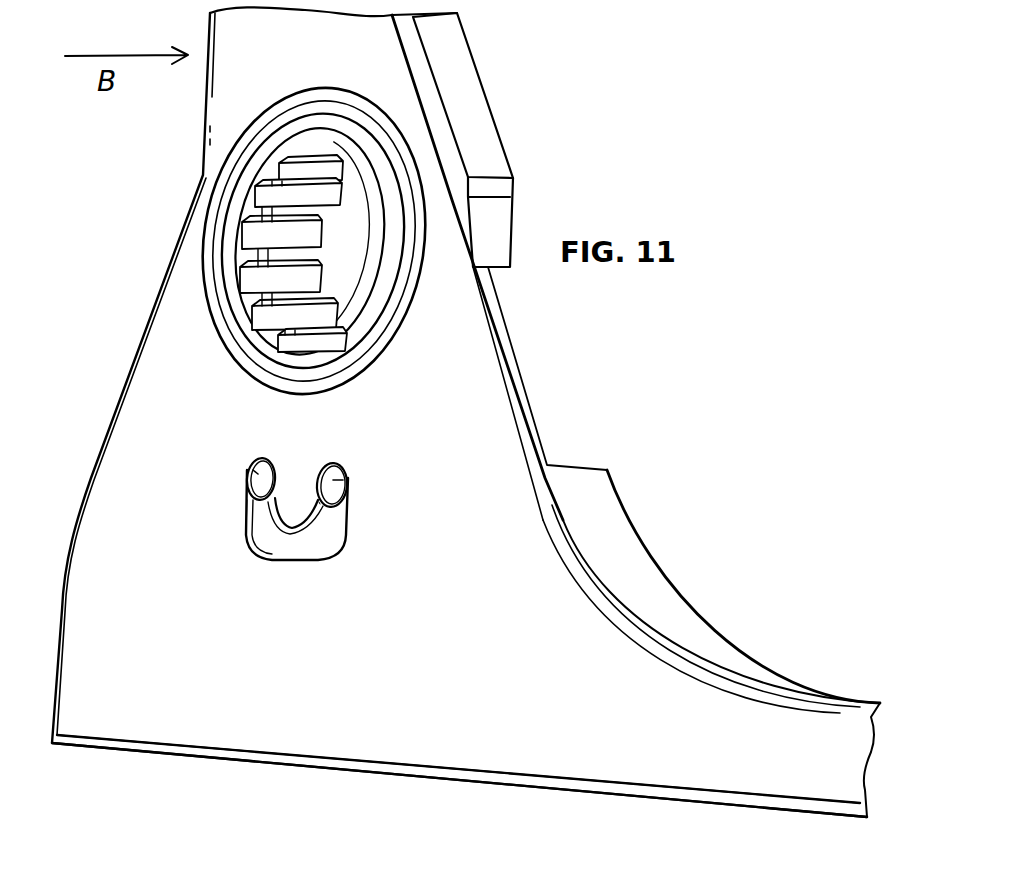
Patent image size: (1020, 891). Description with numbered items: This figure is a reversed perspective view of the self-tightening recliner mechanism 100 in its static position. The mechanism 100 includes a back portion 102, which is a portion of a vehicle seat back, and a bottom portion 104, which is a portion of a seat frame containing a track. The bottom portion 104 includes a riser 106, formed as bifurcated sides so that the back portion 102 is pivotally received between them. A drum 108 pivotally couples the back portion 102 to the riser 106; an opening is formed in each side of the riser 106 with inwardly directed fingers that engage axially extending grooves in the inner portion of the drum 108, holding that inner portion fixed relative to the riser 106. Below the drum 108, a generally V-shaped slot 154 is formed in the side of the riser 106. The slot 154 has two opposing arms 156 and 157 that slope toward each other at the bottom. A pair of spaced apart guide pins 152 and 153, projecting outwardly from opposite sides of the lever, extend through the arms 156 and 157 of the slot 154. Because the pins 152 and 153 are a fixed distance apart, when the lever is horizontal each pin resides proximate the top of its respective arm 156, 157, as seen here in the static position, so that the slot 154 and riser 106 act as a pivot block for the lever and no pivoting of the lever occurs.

The self-tightening recliner mechanism 100 is at (157, 181).
The back portion 102 is at (452, 47).
The bottom portion 104 is at (218, 722).
The riser 106 is at (513, 407).
The drum 108 is at (389, 376).
The guide pin 152 is at (258, 460).
The guide pin 153 is at (348, 477).
The V-shaped slot 154 is at (321, 478).
The arm 156 is at (263, 518).
The arm 157 is at (328, 522).